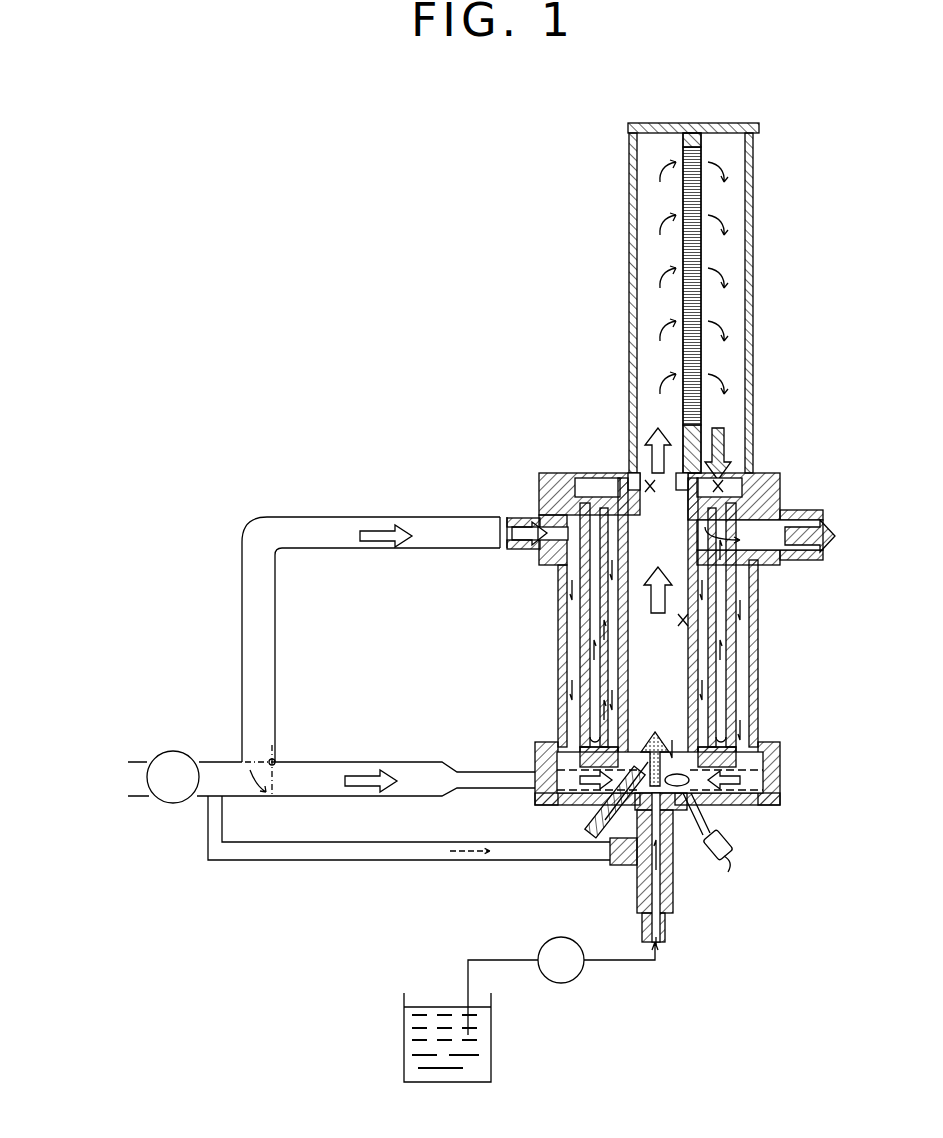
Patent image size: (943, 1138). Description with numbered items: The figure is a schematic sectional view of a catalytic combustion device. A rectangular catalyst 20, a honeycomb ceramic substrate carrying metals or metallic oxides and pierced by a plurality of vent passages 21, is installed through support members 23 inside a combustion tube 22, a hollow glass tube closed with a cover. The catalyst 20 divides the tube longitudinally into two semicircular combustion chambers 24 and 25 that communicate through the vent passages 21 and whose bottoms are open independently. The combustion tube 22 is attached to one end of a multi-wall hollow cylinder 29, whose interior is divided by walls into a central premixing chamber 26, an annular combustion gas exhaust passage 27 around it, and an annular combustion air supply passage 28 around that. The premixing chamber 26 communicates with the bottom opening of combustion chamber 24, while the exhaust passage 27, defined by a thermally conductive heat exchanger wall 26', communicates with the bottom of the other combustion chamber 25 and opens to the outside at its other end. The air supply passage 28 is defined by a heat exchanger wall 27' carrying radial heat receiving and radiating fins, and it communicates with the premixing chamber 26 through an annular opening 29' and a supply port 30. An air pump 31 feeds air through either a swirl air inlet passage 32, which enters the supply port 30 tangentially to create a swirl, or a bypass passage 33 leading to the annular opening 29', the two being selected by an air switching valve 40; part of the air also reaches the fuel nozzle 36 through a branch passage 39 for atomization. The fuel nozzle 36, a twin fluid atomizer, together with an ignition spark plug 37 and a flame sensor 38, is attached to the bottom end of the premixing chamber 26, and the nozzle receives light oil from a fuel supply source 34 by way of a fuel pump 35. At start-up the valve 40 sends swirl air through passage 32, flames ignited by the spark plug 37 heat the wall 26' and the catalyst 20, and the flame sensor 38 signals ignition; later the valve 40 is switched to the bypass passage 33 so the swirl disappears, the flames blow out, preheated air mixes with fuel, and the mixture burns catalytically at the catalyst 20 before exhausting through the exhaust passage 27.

The catalyst 20 is at (700, 250).
The vent passages 21 is at (700, 190).
The combustion tube 22 is at (752, 325).
The support members 23 is at (685, 137).
The combustion chamber 24 is at (650, 362).
The combustion chamber 25 is at (718, 362).
The premixing chamber 26 is at (581, 501).
The heat exchanger wall 26' is at (658, 620).
The combustion gas exhaust passage 27 is at (690, 635).
The heat exchanger wall 27' is at (704, 627).
The combustion air supply passage 28 is at (568, 697).
The multi-wall hollow cylinder 29 is at (755, 657).
The annular opening 29' is at (692, 772).
The supply port 30 is at (664, 740).
The air pump 31 is at (185, 777).
The swirl air inlet passage 32 is at (443, 765).
The bypass passage 33 is at (275, 517).
The fuel supply source 34 is at (480, 1022).
The fuel pump 35 is at (563, 986).
The fuel nozzle 36 is at (673, 900).
The ignition spark plug 37 is at (590, 818).
The flame sensor 38 is at (705, 820).
The branch passage 39 is at (345, 860).
The air switching valve 40 is at (277, 758).